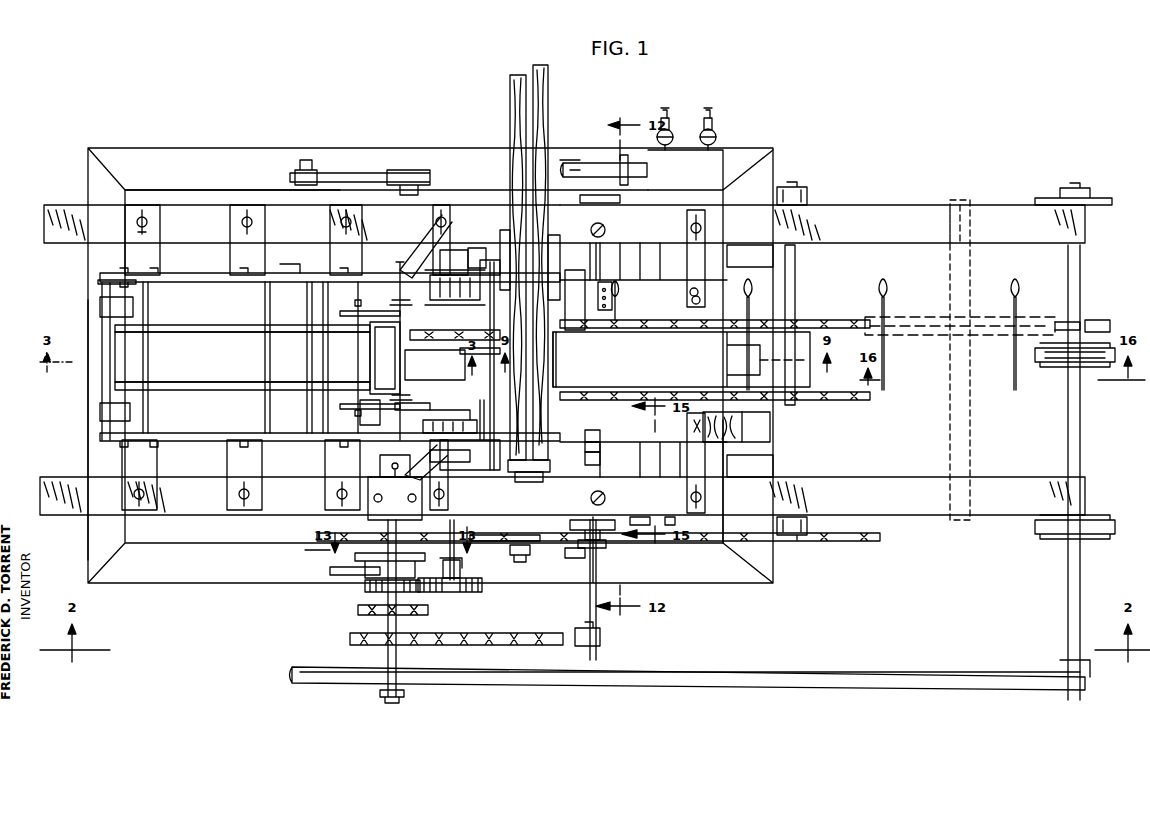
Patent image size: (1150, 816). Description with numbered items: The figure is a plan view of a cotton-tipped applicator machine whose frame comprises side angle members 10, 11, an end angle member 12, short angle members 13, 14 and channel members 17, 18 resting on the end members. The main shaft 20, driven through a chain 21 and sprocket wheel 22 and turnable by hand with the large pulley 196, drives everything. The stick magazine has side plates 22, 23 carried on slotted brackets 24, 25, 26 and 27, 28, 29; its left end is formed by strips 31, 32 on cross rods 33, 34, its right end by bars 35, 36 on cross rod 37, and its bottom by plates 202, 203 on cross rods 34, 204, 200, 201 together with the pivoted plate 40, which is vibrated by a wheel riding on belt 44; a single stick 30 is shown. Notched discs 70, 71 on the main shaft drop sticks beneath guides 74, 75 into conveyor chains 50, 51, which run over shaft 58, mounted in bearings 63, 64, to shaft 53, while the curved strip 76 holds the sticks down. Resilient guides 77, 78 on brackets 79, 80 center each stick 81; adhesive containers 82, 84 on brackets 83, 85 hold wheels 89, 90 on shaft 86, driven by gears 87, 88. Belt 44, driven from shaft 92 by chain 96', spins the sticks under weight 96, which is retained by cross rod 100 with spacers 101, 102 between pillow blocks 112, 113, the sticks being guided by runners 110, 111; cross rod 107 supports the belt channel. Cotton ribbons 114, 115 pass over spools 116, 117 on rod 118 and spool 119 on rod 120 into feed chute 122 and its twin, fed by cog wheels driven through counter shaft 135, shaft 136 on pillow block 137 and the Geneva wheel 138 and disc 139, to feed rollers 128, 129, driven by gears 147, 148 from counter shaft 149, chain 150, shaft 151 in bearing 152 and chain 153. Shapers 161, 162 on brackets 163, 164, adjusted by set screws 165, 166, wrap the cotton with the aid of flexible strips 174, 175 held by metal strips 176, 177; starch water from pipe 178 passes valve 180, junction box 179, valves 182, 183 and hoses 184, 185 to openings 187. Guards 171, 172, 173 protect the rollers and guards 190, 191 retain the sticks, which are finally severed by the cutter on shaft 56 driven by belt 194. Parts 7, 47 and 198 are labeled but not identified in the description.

The upper cross beam 7 is at (57, 222).
The side angle member 10 is at (330, 160).
The side angle member 11 is at (232, 575).
The end angle member 12 is at (88, 462).
The short angle member 13 is at (775, 252).
The short angle member 14 is at (765, 545).
The channel member 17 is at (905, 215).
The channel member 18 is at (57, 510).
The main shaft 20 is at (386, 702).
The chain 21 is at (362, 611).
The side plate 22 is at (190, 272).
The side plate 23 is at (195, 441).
The L-shaped bracket 24 is at (143, 215).
The L-shaped bracket 25 is at (238, 218).
The L-shaped bracket 26 is at (335, 212).
The bracket 27 is at (150, 510).
The bracket 28 is at (240, 500).
The bracket 29 is at (325, 493).
The stick 30 is at (322, 357).
The metal strip 31 is at (104, 300).
The metal strip 32 is at (100, 411).
The cross rod 33 is at (100, 383).
The cross rod 34 is at (100, 282).
The vertical metal bar 35 is at (366, 315).
The vertical metal bar 36 is at (362, 407).
The cross rod 37 is at (376, 345).
The bottom plate 40 is at (232, 388).
The belt 44 is at (812, 380).
The block 47 is at (376, 370).
The conveyor chain 50 is at (842, 318).
The conveyor chain 51 is at (830, 402).
The shaft 53 is at (1082, 283).
The shaft 56 is at (1081, 440).
The shaft 58 is at (796, 291).
The bearing 63 is at (805, 187).
The bearing 64 is at (810, 530).
The notched disc 70 is at (356, 303).
The notched disc 71 is at (356, 416).
The guide 74 is at (412, 318).
The guide 75 is at (416, 412).
The curved metal strip 76 is at (432, 358).
The resilient metal guide 77 is at (494, 300).
The resilient metal guide 78 is at (470, 440).
The bracket 79 is at (440, 240).
The bracket 80 is at (440, 470).
The stick 81 is at (485, 418).
The adhesive container 82 is at (482, 250).
The bracket 83 is at (462, 250).
The adhesive container 84 is at (500, 542).
The bracket 85 is at (479, 542).
The shaft 86 is at (470, 580).
The gear 87 is at (368, 590).
The gear 88 is at (468, 592).
The adhesive applying wheel 89 is at (462, 300).
The adhesive applying wheel 90 is at (462, 420).
The shaft 92 is at (318, 253).
The weight 96 is at (681, 359).
The chain 96' is at (360, 158).
The cross rod 100 is at (590, 198).
The tubular spacer 101 is at (598, 265).
The tubular spacer 102 is at (600, 462).
The cross rod 107 is at (727, 465).
The runner 110 is at (468, 340).
The runner 111 is at (472, 356).
The pillow block 112 is at (606, 228).
The pillow block 113 is at (606, 500).
The cotton ribbon 114 is at (510, 106).
The cotton ribbon 115 is at (547, 98).
The spool 116 is at (502, 230).
The spool 117 is at (556, 245).
The rod 118 is at (470, 250).
The spool 119 is at (520, 472).
The rod 120 is at (475, 462).
The feed chute 122 is at (598, 440).
The feed roller 128 is at (560, 340).
The feed roller 129 is at (560, 365).
The counter shaft 135 is at (522, 556).
The shaft 136 is at (380, 458).
The pillow block 137 is at (383, 494).
The four spoked wheel 138 is at (362, 565).
The disc 139 is at (428, 582).
The gear 147 is at (552, 565).
The gear 148 is at (580, 526).
The counter shaft 149 is at (593, 548).
The chain 150 is at (605, 540).
The shaft 151 is at (600, 636).
The bearing 152 is at (588, 585).
The chain 153 is at (530, 645).
The shaper 161 is at (632, 288).
The shaper 162 is at (770, 426).
The bracket 163 is at (660, 256).
The bracket 164 is at (658, 465).
The set screw 165 is at (637, 518).
The set screw 166 is at (678, 530).
The guard 171 is at (524, 483).
The guard 172 is at (574, 272).
The guard 173 is at (600, 448).
The flexible strip 174 is at (770, 270).
The flexible strip 175 is at (775, 445).
The metal strip 176 is at (705, 240).
The metal strip 177 is at (703, 470).
The pipe 178 is at (600, 165).
The junction box 179 is at (712, 173).
The shut off valve 180 is at (622, 165).
The valve 182 is at (672, 133).
The valve 183 is at (716, 137).
The hose 184 is at (668, 117).
The hose 185 is at (711, 117).
The small openings 187 is at (622, 300).
The guard 190 is at (906, 320).
The guard 191 is at (1000, 395).
The belt 194 is at (748, 670).
The large pulley 196 is at (320, 666).
The sprocket 198 is at (1030, 540).
The cross rod 200 is at (268, 410).
The cross rod 201 is at (373, 416).
The bottom plate 202 is at (200, 327).
The bottom plate 203 is at (243, 395).
The cross rod 204 is at (148, 410).